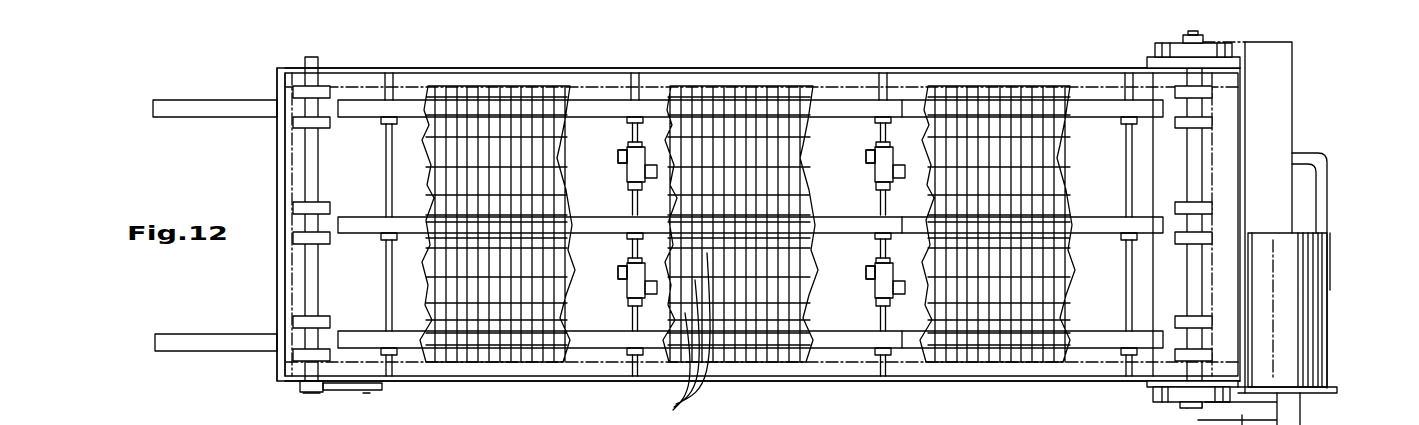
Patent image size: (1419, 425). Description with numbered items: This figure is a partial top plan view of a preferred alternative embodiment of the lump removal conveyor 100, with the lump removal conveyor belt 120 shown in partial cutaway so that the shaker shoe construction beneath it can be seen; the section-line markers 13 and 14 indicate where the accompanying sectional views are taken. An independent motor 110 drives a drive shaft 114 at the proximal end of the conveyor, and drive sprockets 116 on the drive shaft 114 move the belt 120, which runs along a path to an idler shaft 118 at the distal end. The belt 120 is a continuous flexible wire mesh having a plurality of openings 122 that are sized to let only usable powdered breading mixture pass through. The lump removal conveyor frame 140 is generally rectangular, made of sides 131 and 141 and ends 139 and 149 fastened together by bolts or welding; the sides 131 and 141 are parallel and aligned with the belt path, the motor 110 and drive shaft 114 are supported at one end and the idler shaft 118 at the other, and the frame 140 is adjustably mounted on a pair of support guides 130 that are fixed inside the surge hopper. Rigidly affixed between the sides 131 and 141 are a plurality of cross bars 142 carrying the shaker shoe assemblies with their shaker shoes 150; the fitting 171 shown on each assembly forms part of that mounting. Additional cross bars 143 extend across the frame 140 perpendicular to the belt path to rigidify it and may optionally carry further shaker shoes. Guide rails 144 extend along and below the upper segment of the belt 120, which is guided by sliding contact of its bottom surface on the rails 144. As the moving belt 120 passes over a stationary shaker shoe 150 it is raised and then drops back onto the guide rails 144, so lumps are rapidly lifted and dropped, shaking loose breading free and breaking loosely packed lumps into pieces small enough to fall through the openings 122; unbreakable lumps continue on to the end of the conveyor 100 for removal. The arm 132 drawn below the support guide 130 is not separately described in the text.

The lump removal conveyor 100 is at (684, 60).
The motor 110 is at (1313, 263).
The drive shaft 114 is at (1213, 118).
The drive sprockets 116 is at (1207, 173).
The idler shaft 118 is at (305, 143).
The lump removal conveyor belt 120 is at (450, 86).
The openings 122 is at (673, 337).
The support guides 130 is at (200, 102).
The side 131 is at (420, 381).
The support arm 132 is at (212, 347).
The end 139 is at (277, 295).
The lump removal conveyor frame 140 is at (950, 381).
The side 141 is at (365, 67).
The cross bars 142 is at (633, 205).
The additional cross bars 143 is at (388, 207).
The guide rails 144 is at (910, 90).
The end 149 is at (1247, 87).
The shaker shoes 150 is at (618, 156).
The nozzle fitting 171 is at (620, 178).
The section line 13 is at (135, 313).
The section line 14 is at (768, 50).